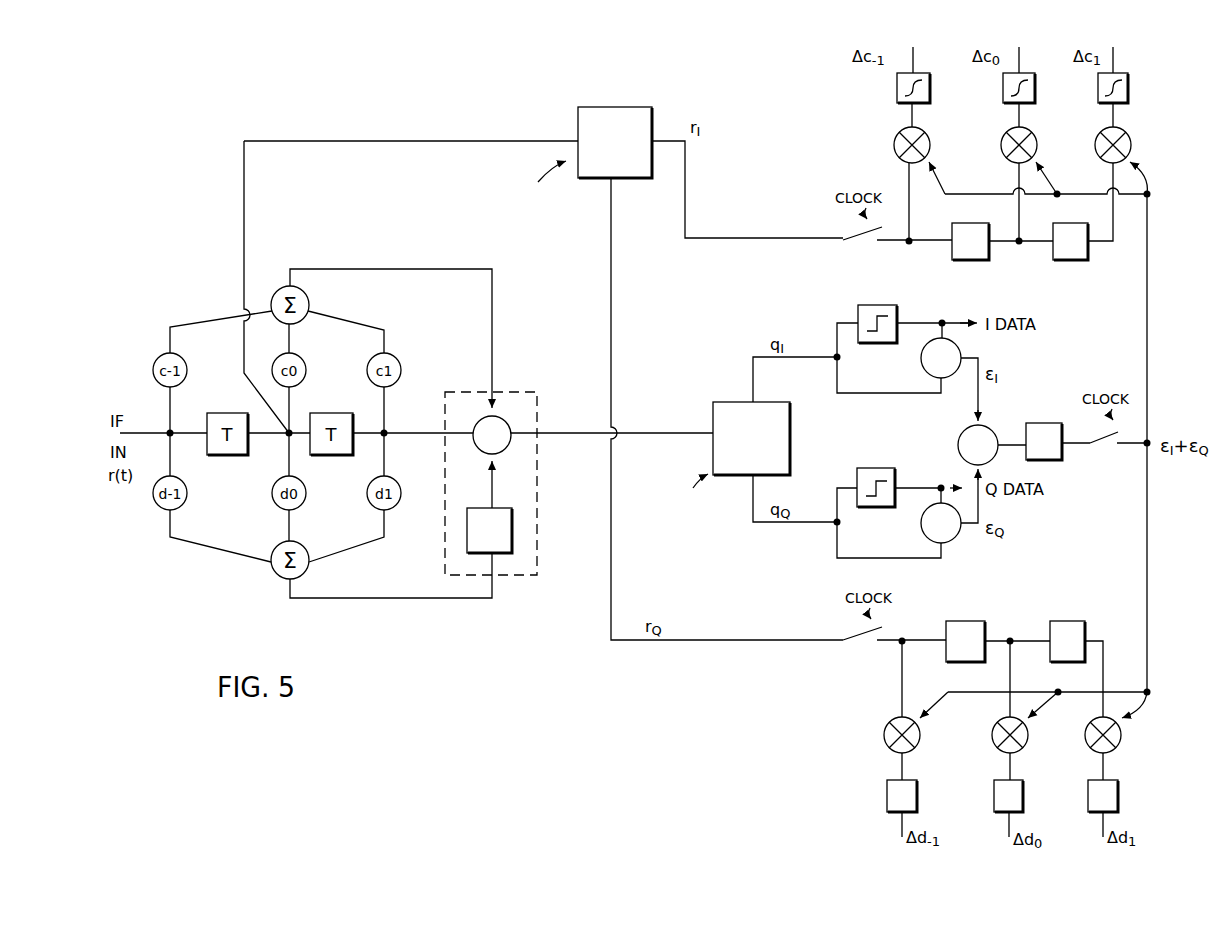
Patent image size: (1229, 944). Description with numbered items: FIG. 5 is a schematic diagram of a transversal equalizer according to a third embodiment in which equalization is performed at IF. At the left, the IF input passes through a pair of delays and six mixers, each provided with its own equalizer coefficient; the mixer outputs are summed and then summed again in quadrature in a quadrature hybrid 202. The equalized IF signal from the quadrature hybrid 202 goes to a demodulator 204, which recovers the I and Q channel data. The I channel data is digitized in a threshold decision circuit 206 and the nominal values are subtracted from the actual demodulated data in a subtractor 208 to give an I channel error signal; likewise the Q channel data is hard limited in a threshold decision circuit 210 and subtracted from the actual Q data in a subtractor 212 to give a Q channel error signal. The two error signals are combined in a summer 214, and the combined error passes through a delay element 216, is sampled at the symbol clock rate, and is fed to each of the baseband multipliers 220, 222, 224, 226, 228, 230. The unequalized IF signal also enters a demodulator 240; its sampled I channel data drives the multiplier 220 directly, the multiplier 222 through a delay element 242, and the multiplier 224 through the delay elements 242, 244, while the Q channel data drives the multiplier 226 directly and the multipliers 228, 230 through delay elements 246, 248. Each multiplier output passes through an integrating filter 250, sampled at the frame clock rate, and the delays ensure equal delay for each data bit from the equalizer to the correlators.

The quadrature hybrid 202 is at (504, 578).
The demodulator 204 is at (732, 402).
The threshold decision circuit 206 is at (857, 317).
The subtractor 208 is at (923, 364).
The threshold decision circuit 210 is at (877, 467).
The subtractor 212 is at (922, 530).
The summer 214 is at (958, 446).
The delay element 216 is at (1046, 421).
The multiplier 220 is at (895, 152).
The multiplier 222 is at (1002, 152).
The multiplier 224 is at (1096, 152).
The multiplier 226 is at (884, 738).
The multiplier 228 is at (992, 738).
The multiplier 230 is at (1085, 738).
The demodulator 240 is at (618, 107).
The delay element 242 is at (972, 263).
The delay element 244 is at (1072, 263).
The delay element 246 is at (967, 619).
The delay element 248 is at (1070, 619).
The integrating filter 250 is at (897, 90).